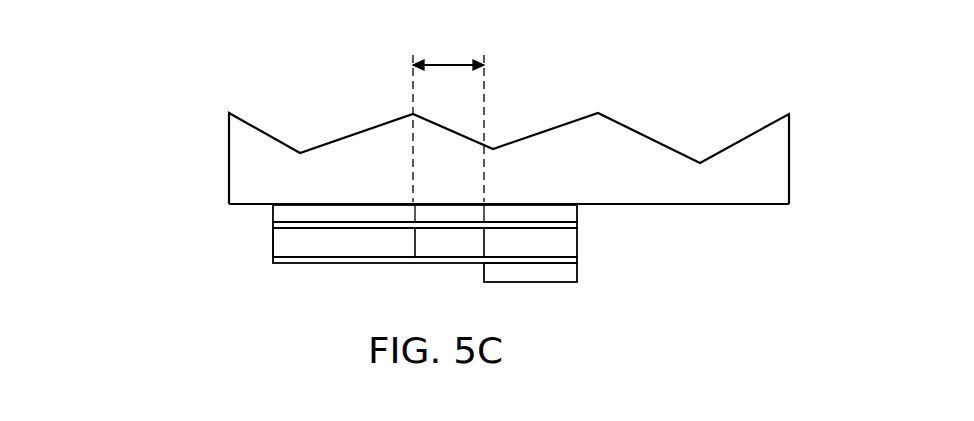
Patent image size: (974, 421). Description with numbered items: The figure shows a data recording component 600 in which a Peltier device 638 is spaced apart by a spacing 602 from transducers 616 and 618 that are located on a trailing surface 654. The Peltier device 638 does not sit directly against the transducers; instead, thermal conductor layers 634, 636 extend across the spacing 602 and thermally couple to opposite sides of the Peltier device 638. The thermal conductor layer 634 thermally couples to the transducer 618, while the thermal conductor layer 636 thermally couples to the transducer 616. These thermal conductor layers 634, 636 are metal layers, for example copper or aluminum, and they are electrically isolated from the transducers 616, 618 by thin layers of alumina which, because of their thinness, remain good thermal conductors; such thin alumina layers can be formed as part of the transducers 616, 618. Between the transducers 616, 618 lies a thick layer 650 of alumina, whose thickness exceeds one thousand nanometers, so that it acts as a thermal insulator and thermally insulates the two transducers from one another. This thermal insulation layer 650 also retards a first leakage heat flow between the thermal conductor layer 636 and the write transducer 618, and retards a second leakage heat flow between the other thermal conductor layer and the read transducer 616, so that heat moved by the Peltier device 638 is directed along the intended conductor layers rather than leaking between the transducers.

The data recording component 600 is at (832, 145).
The spacing 602 is at (450, 63).
The transducer 616 is at (578, 213).
The transducer 618 is at (578, 272).
The thermal conductor layer 634 is at (273, 262).
The thermal conductor layer 636 is at (273, 228).
The Peltier device 638 is at (273, 242).
The thermal insulation layer 650 is at (578, 240).
The trailing surface 654 is at (742, 205).